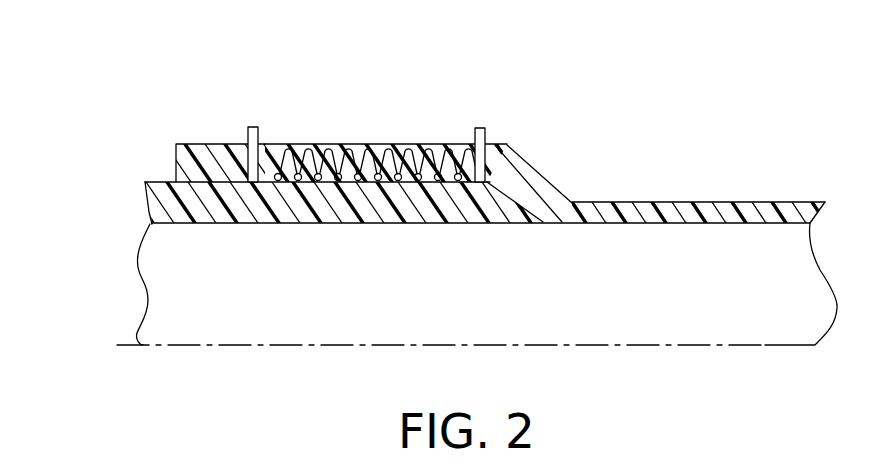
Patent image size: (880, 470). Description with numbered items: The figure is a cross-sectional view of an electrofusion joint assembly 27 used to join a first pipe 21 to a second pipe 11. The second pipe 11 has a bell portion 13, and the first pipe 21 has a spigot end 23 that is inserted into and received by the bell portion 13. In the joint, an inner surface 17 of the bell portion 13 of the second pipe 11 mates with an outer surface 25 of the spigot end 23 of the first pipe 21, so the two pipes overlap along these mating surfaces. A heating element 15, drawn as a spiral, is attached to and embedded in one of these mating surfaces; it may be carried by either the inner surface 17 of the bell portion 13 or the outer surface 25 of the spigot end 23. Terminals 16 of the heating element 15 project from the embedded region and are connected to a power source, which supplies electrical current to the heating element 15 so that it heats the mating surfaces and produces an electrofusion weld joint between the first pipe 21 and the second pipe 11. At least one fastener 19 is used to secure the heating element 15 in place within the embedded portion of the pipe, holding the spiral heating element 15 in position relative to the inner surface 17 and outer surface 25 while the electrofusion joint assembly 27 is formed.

The second pipe 11 is at (605, 190).
The bell portion 13 is at (307, 135).
The heating element 15 is at (358, 144).
The terminals 16 is at (253, 127).
The inner surface 17 is at (212, 183).
The fastener 19 is at (376, 144).
The first pipe 21 is at (152, 169).
The spigot end 23 is at (133, 207).
The outer surface 25 is at (210, 180).
The electrofusion joint assembly 27 is at (456, 107).